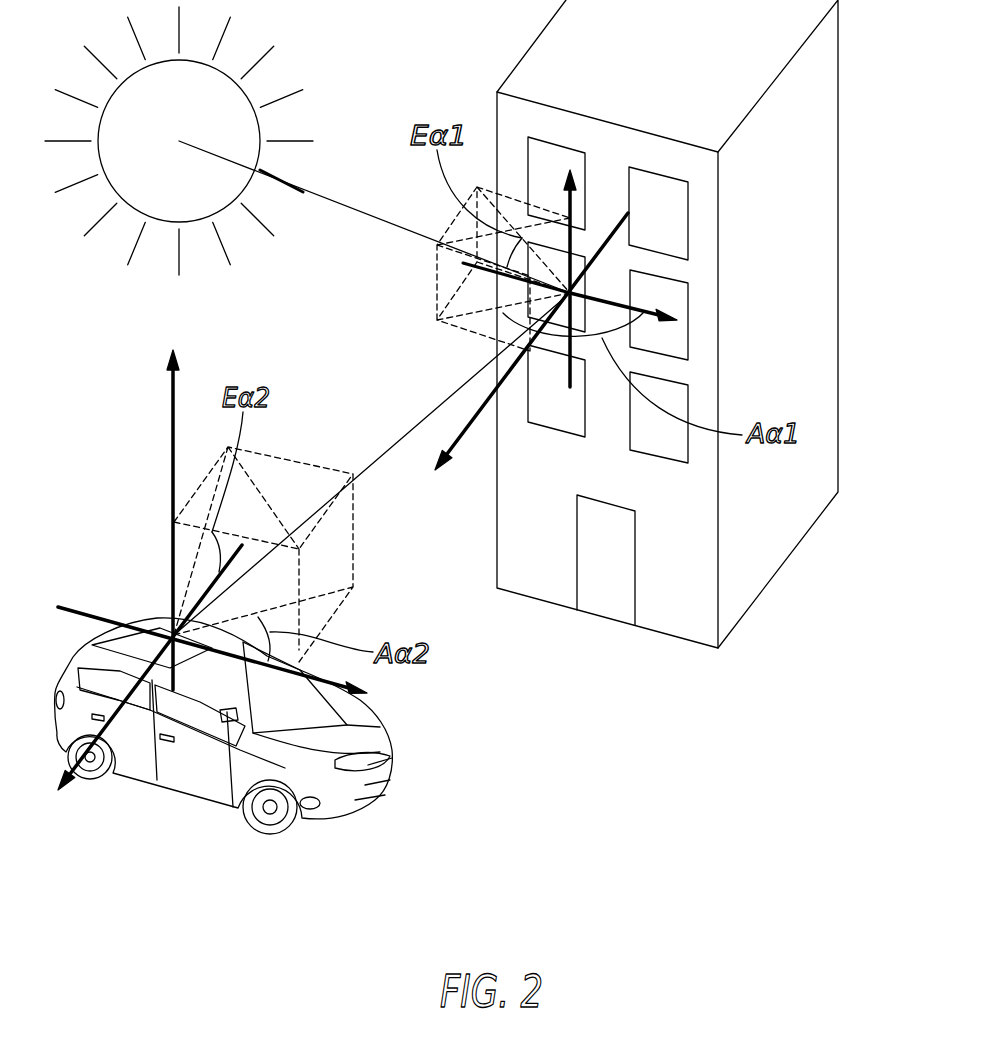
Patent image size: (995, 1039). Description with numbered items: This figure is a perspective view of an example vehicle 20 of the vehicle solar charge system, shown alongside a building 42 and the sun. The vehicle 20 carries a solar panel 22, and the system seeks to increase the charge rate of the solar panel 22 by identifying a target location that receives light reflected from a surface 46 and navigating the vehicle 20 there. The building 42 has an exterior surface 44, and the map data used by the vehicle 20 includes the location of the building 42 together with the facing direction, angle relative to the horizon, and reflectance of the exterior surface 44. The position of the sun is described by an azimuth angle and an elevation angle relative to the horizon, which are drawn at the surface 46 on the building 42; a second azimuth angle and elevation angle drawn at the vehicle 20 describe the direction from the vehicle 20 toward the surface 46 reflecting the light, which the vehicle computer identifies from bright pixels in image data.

The vehicle 20 is at (362, 803).
The solar panel 22 is at (118, 648).
The building 42 is at (697, 324).
The exterior surface 44 is at (697, 583).
The surface reflecting the reflected light 46 is at (578, 290).